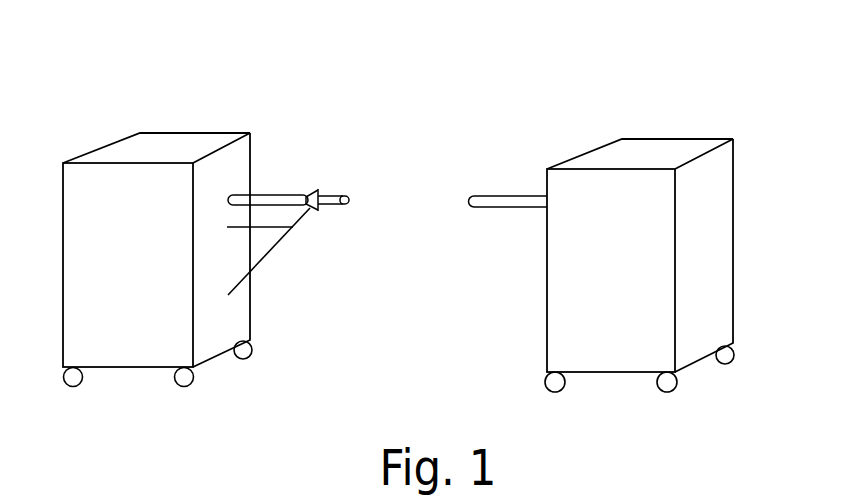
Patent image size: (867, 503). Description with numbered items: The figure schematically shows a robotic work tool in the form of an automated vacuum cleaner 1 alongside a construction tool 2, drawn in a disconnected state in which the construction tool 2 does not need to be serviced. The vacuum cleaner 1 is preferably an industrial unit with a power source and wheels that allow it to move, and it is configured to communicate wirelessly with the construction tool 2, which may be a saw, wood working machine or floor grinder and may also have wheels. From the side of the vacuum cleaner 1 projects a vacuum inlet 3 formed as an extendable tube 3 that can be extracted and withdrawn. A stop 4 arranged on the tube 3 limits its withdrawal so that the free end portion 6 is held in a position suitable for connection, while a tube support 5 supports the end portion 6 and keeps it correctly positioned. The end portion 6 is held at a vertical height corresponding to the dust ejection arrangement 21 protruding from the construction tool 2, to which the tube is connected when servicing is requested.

The robotic work tool / automated vacuum cleaner 1 is at (114, 119).
The construction tool 2 is at (642, 118).
The vacuum inlet / extendable tube 3 is at (268, 195).
The stop 4 is at (318, 192).
The tube support 5 is at (278, 247).
The end portion 6 is at (332, 207).
The dust ejection arrangement 21 is at (487, 198).